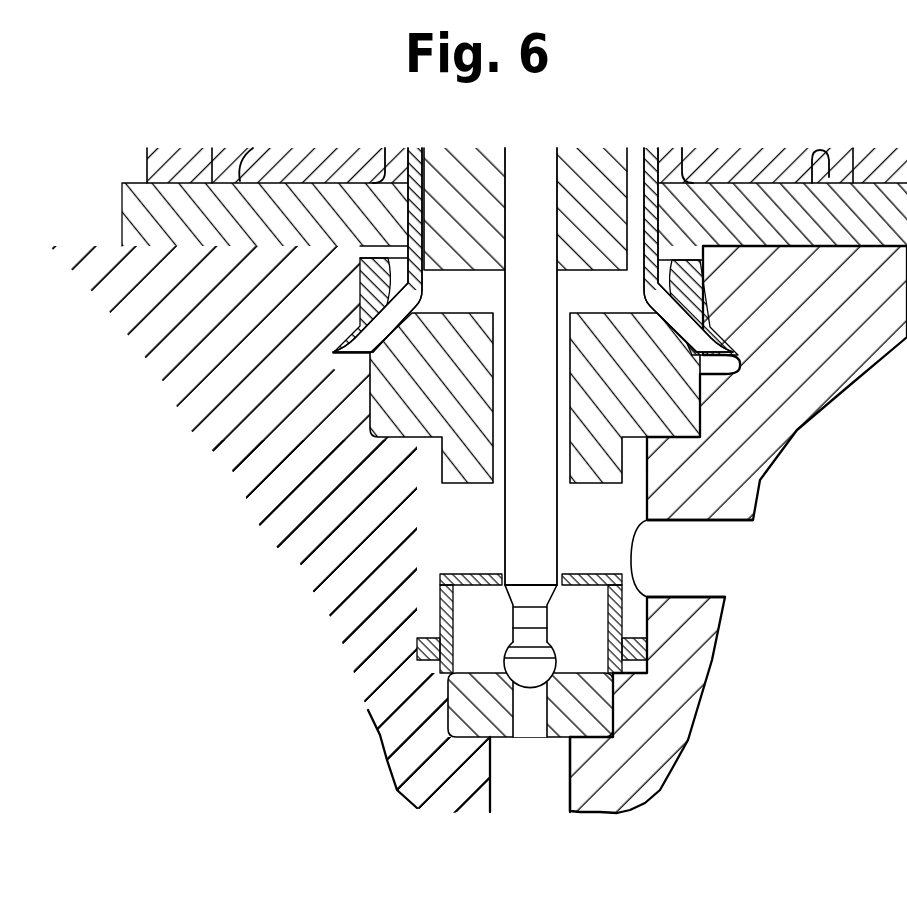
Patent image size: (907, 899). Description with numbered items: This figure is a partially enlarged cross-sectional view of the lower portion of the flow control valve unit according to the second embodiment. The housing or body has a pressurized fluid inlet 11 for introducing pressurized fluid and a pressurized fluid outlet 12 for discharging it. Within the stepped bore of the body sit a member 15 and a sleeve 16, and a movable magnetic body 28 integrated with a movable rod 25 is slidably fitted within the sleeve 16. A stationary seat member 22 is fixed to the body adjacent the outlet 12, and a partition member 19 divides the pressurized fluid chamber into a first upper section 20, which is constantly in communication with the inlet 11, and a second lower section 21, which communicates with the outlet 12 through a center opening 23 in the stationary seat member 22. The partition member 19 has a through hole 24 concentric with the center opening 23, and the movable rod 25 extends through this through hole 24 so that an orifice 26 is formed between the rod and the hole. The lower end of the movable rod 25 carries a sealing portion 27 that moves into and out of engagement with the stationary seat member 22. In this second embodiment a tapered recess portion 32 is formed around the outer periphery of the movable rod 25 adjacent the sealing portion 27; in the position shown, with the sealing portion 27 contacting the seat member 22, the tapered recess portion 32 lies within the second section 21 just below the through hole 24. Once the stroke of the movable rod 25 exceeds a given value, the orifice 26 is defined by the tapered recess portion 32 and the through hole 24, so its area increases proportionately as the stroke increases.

The pressurized fluid inlet 11 is at (702, 575).
The pressurized fluid outlet 12 is at (528, 777).
The member 15 is at (390, 397).
The sleeve 16 is at (656, 176).
The partition member 19 is at (620, 613).
The first upper section 20 is at (610, 538).
The second lower section 21 is at (577, 650).
The stationary seat member 22 is at (388, 755).
The center opening 23 is at (535, 713).
The through hole 24 is at (518, 597).
The movable rod 25 is at (543, 503).
The orifice 26 is at (502, 578).
The sealing portion 27 is at (517, 670).
The movable magnetic body 28 is at (606, 188).
The tapered recess portion 32 is at (517, 618).